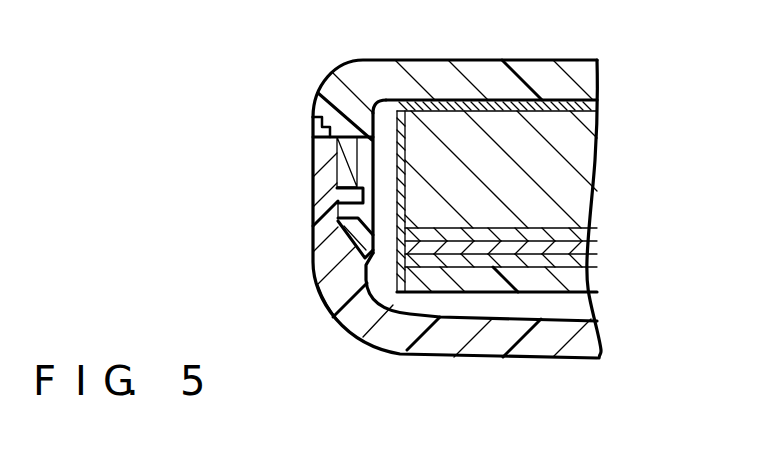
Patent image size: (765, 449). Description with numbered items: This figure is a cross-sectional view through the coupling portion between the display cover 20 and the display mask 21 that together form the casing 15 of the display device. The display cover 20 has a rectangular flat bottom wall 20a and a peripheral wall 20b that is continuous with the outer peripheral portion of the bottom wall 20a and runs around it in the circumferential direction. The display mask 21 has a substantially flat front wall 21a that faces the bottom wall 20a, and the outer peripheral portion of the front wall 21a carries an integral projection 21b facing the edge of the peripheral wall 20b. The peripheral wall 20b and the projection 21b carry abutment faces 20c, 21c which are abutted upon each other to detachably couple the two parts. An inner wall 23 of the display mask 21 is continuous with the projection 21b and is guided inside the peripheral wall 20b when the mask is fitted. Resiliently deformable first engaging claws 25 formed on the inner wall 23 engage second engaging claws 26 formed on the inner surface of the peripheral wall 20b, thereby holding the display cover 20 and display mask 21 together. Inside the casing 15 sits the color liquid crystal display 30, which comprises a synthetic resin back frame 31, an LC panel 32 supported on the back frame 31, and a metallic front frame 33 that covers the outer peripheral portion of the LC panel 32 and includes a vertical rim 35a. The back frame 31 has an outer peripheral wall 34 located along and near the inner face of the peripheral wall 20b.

The casing 15 is at (340, 323).
The display cover 20 is at (332, 300).
The bottom wall 20a is at (590, 348).
The peripheral wall 20b is at (332, 150).
The abutment face 20c is at (327, 143).
The display mask 21 is at (520, 60).
The front wall 21a is at (582, 67).
The projection 21b is at (343, 125).
The abutment face 21c is at (330, 137).
The inner wall 23 is at (376, 127).
The first engaging claw 25 is at (335, 230).
The second engaging claw 26 is at (330, 198).
The color liquid crystal display 30 is at (598, 152).
The back frame 31 is at (590, 290).
The LC panel 32 is at (593, 208).
The front frame 33 is at (596, 90).
The outer peripheral wall 34 is at (407, 233).
The vertical rim 35a is at (450, 98).